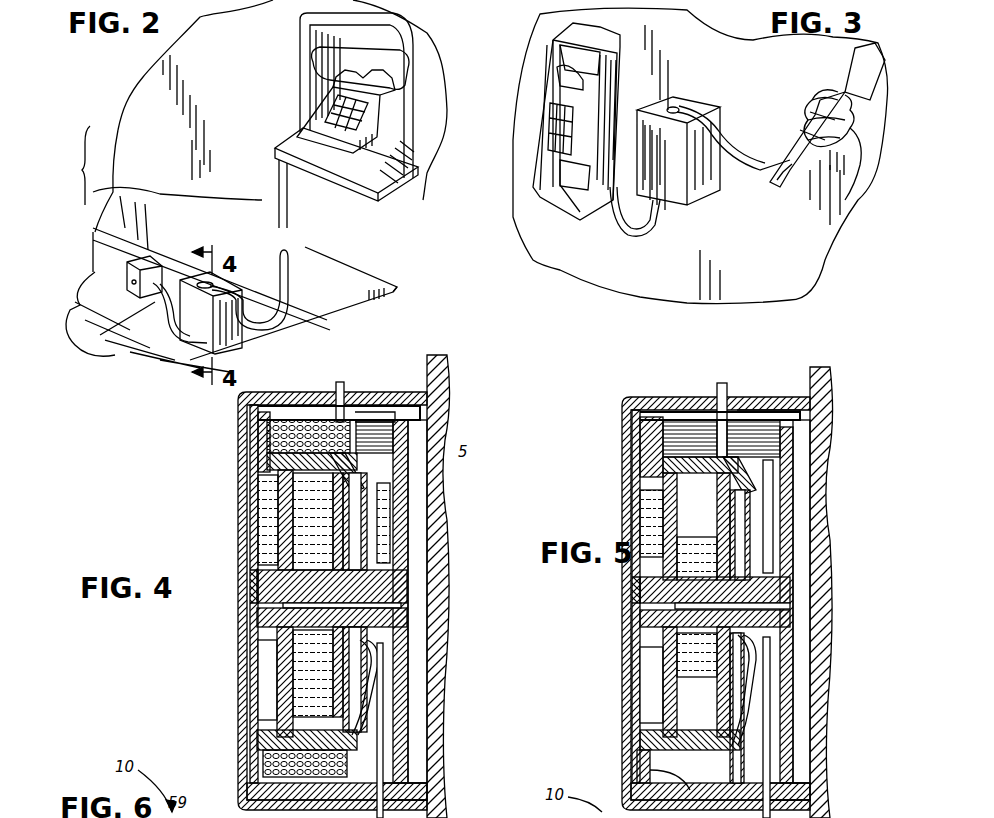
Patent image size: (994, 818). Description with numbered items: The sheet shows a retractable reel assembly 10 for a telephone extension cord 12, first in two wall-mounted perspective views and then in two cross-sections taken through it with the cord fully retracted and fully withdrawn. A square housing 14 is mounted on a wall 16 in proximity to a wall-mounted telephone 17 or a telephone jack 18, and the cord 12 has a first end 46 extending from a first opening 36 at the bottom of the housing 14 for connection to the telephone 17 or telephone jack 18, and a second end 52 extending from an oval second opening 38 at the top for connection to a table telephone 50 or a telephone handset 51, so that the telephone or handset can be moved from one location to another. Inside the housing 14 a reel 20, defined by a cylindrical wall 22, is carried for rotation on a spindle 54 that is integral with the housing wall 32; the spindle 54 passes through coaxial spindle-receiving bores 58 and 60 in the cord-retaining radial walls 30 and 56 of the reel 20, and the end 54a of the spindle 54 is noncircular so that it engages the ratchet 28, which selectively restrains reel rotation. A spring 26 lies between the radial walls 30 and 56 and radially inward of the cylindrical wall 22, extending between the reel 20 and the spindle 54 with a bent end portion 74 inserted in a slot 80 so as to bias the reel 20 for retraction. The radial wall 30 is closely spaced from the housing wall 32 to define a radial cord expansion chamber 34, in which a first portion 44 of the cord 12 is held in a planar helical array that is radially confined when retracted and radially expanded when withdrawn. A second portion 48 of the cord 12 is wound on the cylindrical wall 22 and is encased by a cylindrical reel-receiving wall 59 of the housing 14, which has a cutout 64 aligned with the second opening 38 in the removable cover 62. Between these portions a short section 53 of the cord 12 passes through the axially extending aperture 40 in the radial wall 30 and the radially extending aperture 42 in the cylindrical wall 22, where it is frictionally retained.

In FIG. 2, the retractable reel assembly 10 is at (175, 336).
In FIG. 4, the retractable reel assembly 10 is at (150, 497).
In FIG. 5, the retractable reel assembly 10 is at (610, 595).
In FIG. 2, the telephone extension cord 12 is at (288, 282).
In FIG. 3, the telephone extension cord 12 is at (737, 135).
In FIG. 4, the telephone extension cord 12 is at (250, 740).
In FIG. 4, the housing 14 is at (313, 384).
In FIG. 5, the housing 14 is at (683, 398).
In FIG. 2, the wall 16 is at (345, 300).
In FIG. 3, the wall 16 is at (620, 262).
In FIG. 4, the wall 16 is at (440, 386).
In FIG. 5, the wall 16 is at (822, 548).
In FIG. 3, the telephone 17 is at (553, 50).
In FIG. 2, the telephone jack 18 is at (127, 274).
In FIG. 4, the reel 20 is at (395, 420).
In FIG. 5, the reel 20 is at (660, 400).
In FIG. 4, the cylindrical wall 22 is at (262, 468).
In FIG. 5, the cylindrical wall 22 is at (640, 475).
In FIG. 4, the spring 26 is at (300, 505).
In FIG. 5, the spring 26 is at (680, 672).
In FIG. 4, the ratchet 28 is at (268, 530).
In FIG. 5, the ratchet 28 is at (650, 505).
In FIG. 4, the cord-retaining radial wall 30 is at (367, 690).
In FIG. 5, the cord-retaining radial wall 30 is at (755, 692).
In FIG. 4, the housing wall 32 is at (408, 460).
In FIG. 5, the housing wall 32 is at (795, 480).
In FIG. 4, the radial cord expansion chamber 34 is at (420, 430).
In FIG. 5, the radial cord expansion chamber 34 is at (805, 435).
In FIG. 4, the first opening 36 is at (432, 795).
In FIG. 5, the first opening 36 is at (830, 800).
In FIG. 4, the second opening 38 is at (360, 405).
In FIG. 5, the second opening 38 is at (737, 400).
In FIG. 4, the axially extending aperture 40 is at (372, 642).
In FIG. 5, the axially extending aperture 40 is at (760, 640).
In FIG. 4, the radially extending aperture 42 is at (368, 735).
In FIG. 5, the radially extending aperture 42 is at (760, 732).
In FIG. 5, the first portion 44 is at (800, 457).
In FIG. 2, the end 46 is at (150, 336).
In FIG. 3, the end 46 is at (652, 240).
In FIG. 4, the end 46 is at (420, 808).
In FIG. 5, the end 46 is at (815, 814).
In FIG. 4, the second portion 48 is at (266, 434).
In FIG. 2, the telephone 50 is at (400, 118).
In FIG. 3, the telephone handset 51 is at (855, 65).
In FIG. 3, the end 52 is at (750, 175).
In FIG. 4, the end 52 is at (341, 383).
In FIG. 5, the end 52 is at (722, 382).
In FIG. 4, the short section 53 is at (385, 708).
In FIG. 5, the short section 53 is at (772, 665).
In FIG. 4, the spindle 54 is at (405, 580).
In FIG. 5, the spindle 54 is at (800, 585).
In FIG. 4, the end of the spindle 54a is at (250, 600).
In FIG. 5, the end of the spindle 54a is at (632, 595).
In FIG. 4, the radial wall 56 is at (262, 440).
In FIG. 5, the radial wall 56 is at (640, 432).
In FIG. 4, the spindle-receiving bore 58 is at (412, 540).
In FIG. 5, the spindle-receiving bore 58 is at (800, 530).
In FIG. 4, the cylindrical reel-receiving wall 59 is at (262, 778).
In FIG. 5, the cylindrical reel-receiving wall 59 is at (635, 767).
In FIG. 4, the spindle-receiving bore 60 is at (262, 632).
In FIG. 5, the spindle-receiving bore 60 is at (637, 643).
In FIG. 2, the removable cover 62 is at (205, 318).
In FIG. 3, the removable cover 62 is at (692, 195).
In FIG. 4, the removable cover 62 is at (243, 460).
In FIG. 5, the removable cover 62 is at (627, 720).
In FIG. 4, the cutout 64 is at (357, 470).
In FIG. 5, the cutout 64 is at (750, 470).
In FIG. 4, the bent end portion 74 is at (405, 616).
In FIG. 5, the bent end portion 74 is at (792, 613).
In FIG. 4, the slot 80 is at (402, 598).
In FIG. 5, the slot 80 is at (793, 590).